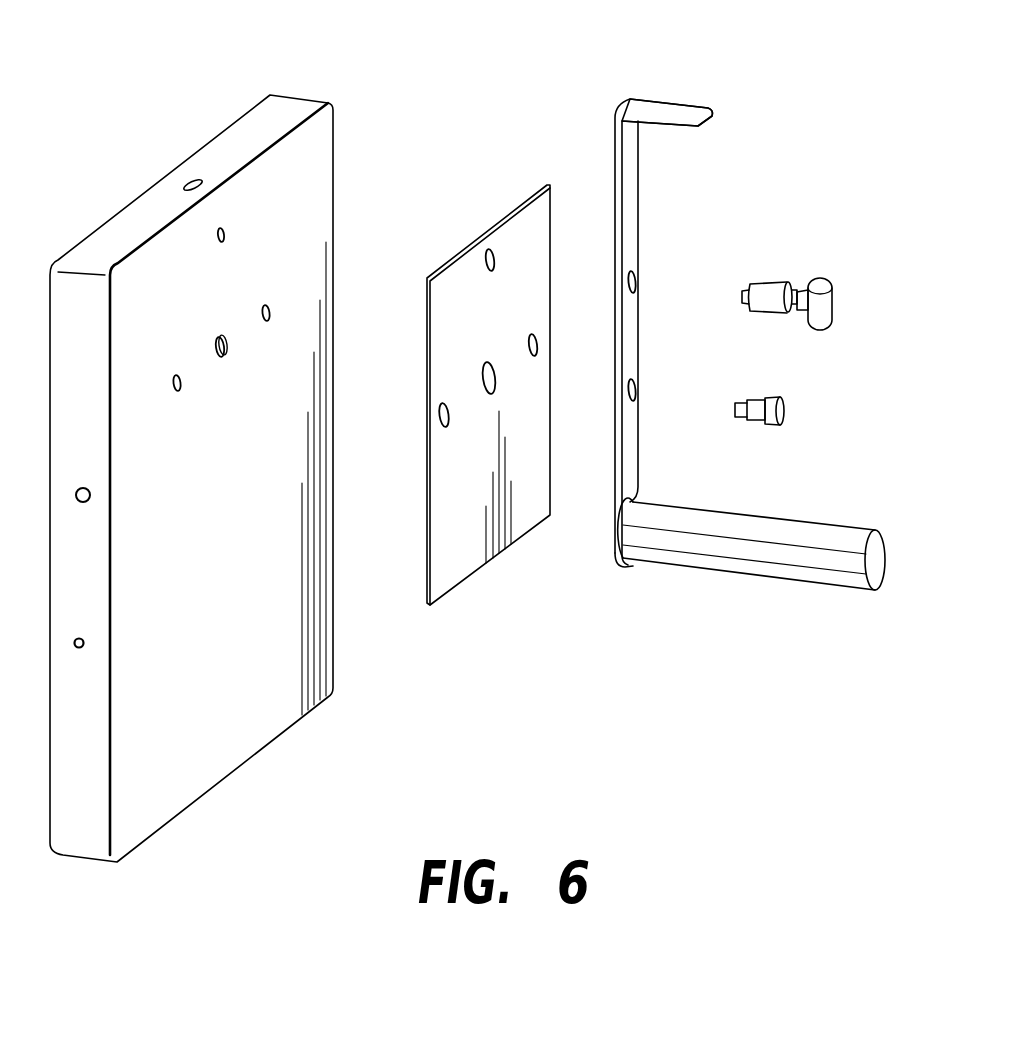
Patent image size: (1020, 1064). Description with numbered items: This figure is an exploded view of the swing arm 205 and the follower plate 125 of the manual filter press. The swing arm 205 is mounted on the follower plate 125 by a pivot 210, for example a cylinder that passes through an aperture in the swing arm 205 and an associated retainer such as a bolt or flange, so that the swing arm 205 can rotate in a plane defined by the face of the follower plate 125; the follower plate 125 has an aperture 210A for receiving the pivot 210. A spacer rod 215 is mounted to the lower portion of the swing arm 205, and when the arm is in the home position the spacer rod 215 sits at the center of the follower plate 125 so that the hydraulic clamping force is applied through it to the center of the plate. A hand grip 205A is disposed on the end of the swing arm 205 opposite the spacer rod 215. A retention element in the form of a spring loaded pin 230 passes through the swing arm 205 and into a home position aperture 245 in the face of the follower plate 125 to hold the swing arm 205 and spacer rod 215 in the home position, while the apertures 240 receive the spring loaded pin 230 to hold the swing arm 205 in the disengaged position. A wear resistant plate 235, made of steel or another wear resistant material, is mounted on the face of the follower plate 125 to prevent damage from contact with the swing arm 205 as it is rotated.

The follower plate 125 is at (308, 100).
The apertures 240 is at (267, 297).
The home position aperture 245 is at (220, 228).
The aperture 210A is at (221, 335).
The wear resistant plate 235 is at (472, 240).
The swing arm 205 is at (638, 250).
The hand grip 205A is at (683, 102).
The spring loaded pin 230 is at (778, 283).
The pivot 210 is at (785, 403).
The spacer rod 215 is at (767, 518).